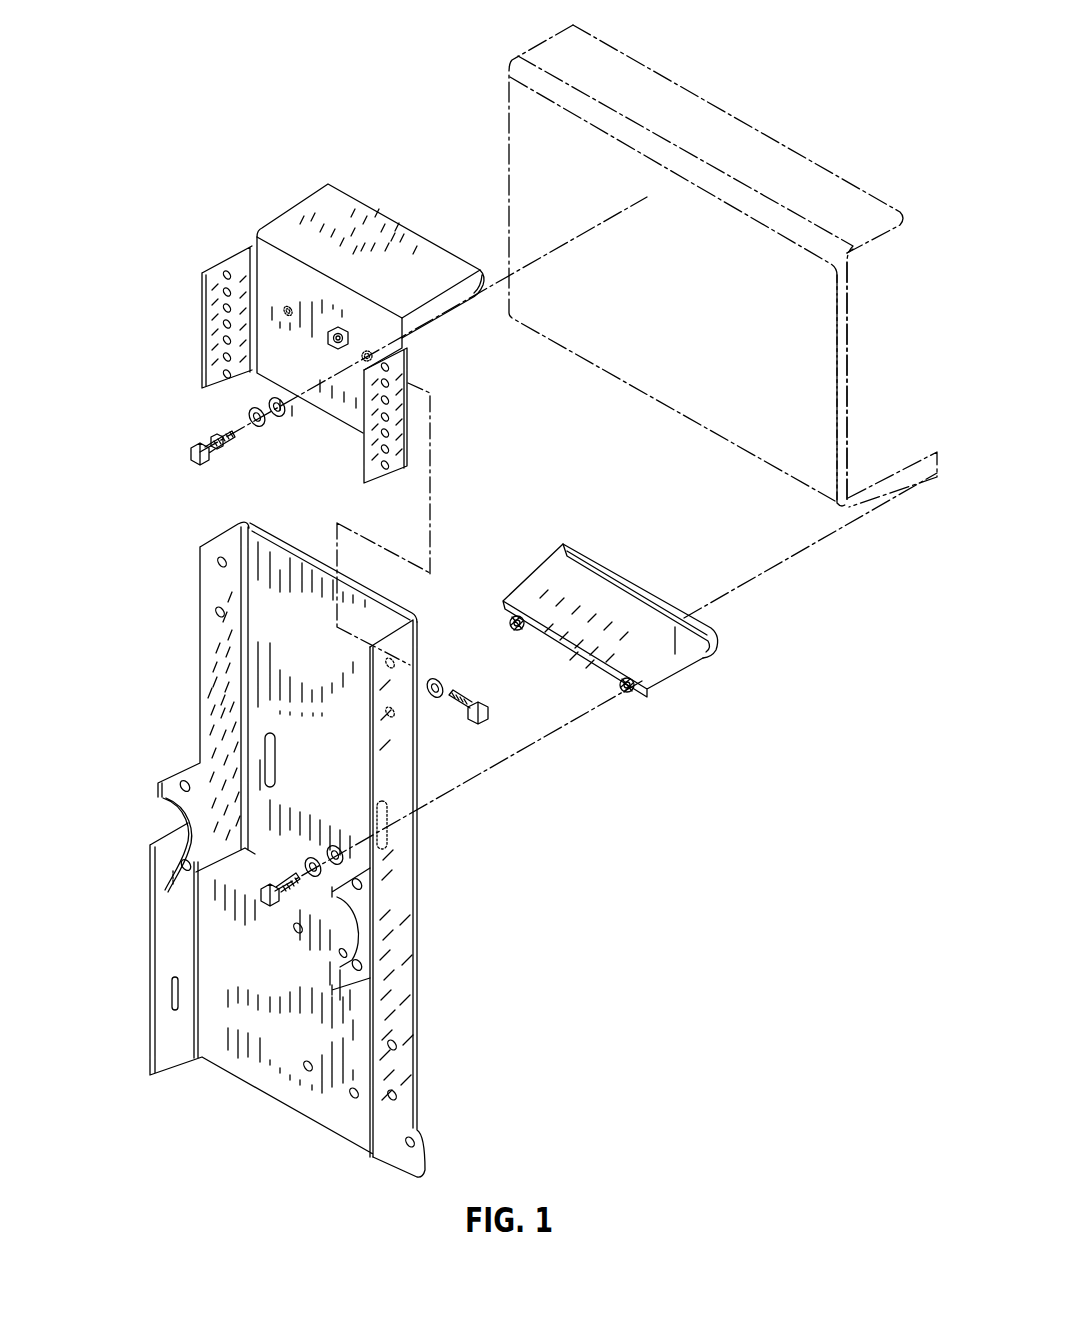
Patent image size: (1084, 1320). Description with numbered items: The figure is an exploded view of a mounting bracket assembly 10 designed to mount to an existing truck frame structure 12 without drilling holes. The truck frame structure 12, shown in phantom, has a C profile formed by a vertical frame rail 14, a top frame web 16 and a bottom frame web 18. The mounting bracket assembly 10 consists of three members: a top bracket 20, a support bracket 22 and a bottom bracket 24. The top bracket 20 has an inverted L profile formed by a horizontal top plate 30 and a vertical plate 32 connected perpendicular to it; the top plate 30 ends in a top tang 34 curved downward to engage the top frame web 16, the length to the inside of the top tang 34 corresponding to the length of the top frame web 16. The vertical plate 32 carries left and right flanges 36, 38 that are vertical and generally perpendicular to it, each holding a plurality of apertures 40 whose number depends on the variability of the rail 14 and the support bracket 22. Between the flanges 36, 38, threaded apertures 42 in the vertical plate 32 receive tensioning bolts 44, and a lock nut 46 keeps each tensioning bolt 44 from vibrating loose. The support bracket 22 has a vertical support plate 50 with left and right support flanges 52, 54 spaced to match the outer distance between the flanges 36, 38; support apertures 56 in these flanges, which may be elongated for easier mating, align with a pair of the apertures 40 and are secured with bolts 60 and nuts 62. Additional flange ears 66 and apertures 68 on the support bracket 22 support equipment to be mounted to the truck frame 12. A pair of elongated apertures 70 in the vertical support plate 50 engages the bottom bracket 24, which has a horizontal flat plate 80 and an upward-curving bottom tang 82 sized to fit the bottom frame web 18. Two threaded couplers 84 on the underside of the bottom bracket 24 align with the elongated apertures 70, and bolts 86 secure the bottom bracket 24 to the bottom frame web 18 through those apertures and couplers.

The mounting bracket assembly 10 is at (152, 114).
The truck frame structure 12 is at (725, 266).
The vertical frame rail 14 is at (852, 345).
The top frame web 16 is at (858, 243).
The bottom frame web 18 is at (868, 450).
The top bracket 20 is at (252, 212).
The support bracket 22 is at (160, 636).
The bottom bracket 24 is at (623, 563).
The top plate 30 is at (315, 208).
The vertical plate 32 is at (299, 369).
The top tang 34 is at (480, 268).
The left flange 36 is at (225, 264).
The right flange 38 is at (398, 350).
The apertures 40 is at (224, 322).
The threaded apertures 42 is at (368, 350).
The tensioning bolts 44 is at (196, 459).
The lock nut 46 is at (212, 438).
The vertical support plate 50 is at (309, 649).
The left support flange 52 is at (234, 529).
The right support flange 54 is at (399, 625).
The support apertures 56 is at (219, 609).
The bolts 60 is at (483, 707).
The nuts 62 is at (336, 328).
The flange ears 66 is at (176, 780).
The apertures 68 is at (296, 936).
The elongated apertures 70 is at (274, 752).
The flat plate 80 is at (594, 623).
The bottom tang 82 is at (722, 640).
The threaded couplers 84 is at (629, 694).
The bolts 86 is at (267, 904).